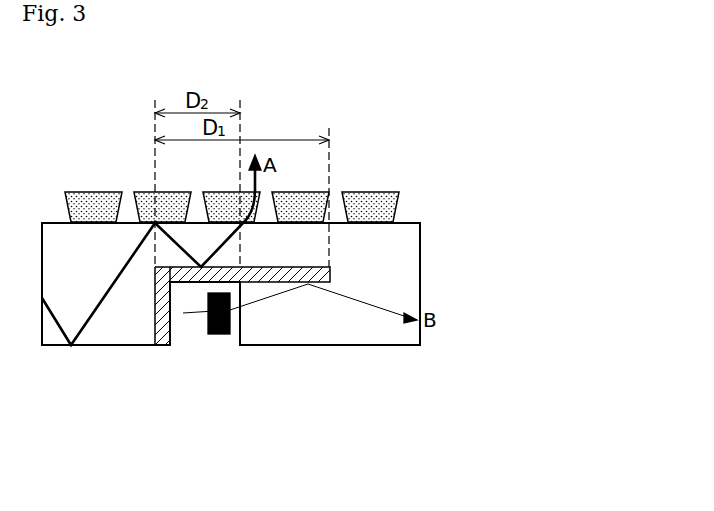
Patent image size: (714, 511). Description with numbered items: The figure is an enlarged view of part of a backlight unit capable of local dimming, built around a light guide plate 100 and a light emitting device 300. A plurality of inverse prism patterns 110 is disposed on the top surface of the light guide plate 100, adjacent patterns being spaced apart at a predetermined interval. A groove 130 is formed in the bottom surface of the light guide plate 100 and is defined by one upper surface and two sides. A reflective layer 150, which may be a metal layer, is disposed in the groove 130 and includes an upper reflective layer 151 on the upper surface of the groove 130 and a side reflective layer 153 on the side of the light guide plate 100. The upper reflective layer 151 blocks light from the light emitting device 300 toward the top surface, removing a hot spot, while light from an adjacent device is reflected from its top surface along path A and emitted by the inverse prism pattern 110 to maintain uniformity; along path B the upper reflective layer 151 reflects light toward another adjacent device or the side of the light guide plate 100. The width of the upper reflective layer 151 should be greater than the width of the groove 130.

The light guide plate 100 is at (419, 273).
The inverse prism pattern 110 is at (373, 190).
The groove 130 is at (203, 311).
The reflective layer 150 is at (219, 359).
The upper reflective layer 151 is at (177, 283).
The side reflective layer 153 is at (160, 345).
The light emitting device 300 is at (223, 334).